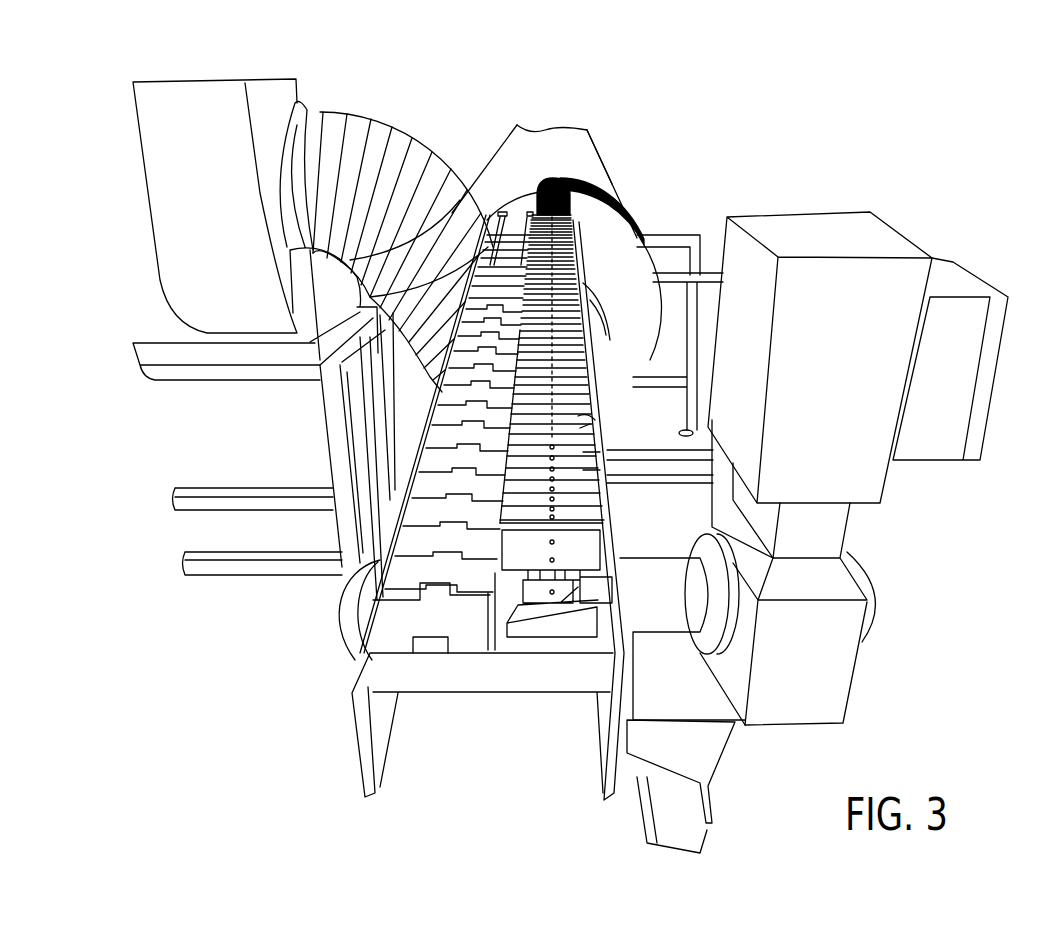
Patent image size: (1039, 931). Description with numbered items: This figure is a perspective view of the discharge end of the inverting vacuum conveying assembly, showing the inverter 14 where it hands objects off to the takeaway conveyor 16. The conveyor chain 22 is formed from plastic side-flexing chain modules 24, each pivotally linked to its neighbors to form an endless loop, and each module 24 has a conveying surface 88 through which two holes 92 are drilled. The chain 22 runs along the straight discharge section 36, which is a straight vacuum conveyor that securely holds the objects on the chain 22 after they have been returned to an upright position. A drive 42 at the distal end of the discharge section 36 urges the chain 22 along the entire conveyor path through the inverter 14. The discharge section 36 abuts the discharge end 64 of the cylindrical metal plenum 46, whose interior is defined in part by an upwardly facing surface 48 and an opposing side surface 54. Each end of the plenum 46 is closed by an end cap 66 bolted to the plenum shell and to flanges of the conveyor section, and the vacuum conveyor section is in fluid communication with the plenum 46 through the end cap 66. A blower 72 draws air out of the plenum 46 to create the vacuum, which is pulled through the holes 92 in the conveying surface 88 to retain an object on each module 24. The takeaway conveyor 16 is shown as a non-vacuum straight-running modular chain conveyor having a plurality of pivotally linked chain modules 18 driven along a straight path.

The inverter 14 is at (612, 151).
The takeaway conveyor 16 is at (537, 282).
The chain modules 18 is at (435, 445).
The conveyor chain 22 is at (627, 215).
The chain modules 24 is at (587, 475).
The discharge section 36 is at (606, 348).
The drive 42 is at (900, 237).
The plenum 46 is at (562, 170).
The upwardly facing surface 48 is at (565, 132).
The side surface 54 is at (610, 177).
The discharge end 64 is at (640, 294).
The end cap 66 is at (490, 180).
The blower 72 is at (298, 78).
The conveying surface 88 is at (583, 430).
The holes 92 is at (556, 437).